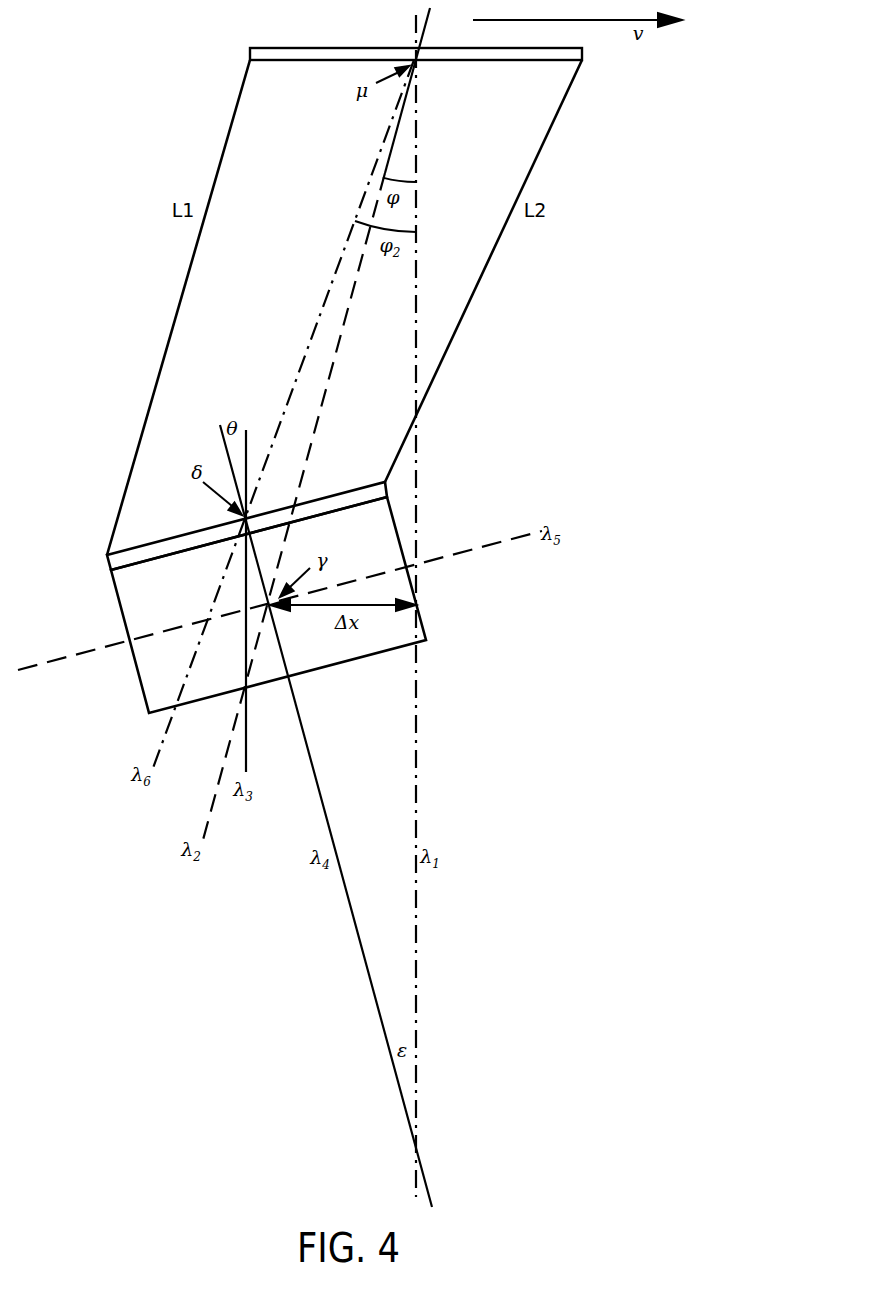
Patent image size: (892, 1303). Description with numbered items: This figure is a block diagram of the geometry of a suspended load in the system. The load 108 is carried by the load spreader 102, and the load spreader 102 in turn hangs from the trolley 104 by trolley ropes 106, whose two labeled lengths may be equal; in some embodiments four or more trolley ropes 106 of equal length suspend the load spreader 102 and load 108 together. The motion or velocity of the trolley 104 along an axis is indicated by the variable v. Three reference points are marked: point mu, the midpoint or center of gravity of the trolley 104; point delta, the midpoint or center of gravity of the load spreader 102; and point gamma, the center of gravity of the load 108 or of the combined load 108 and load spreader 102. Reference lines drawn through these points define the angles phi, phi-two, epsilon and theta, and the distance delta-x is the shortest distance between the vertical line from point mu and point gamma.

The load spreader 102 is at (210, 527).
The trolley 104 is at (268, 48).
The trolley ropes 106 is at (188, 274).
The load 108 is at (118, 604).